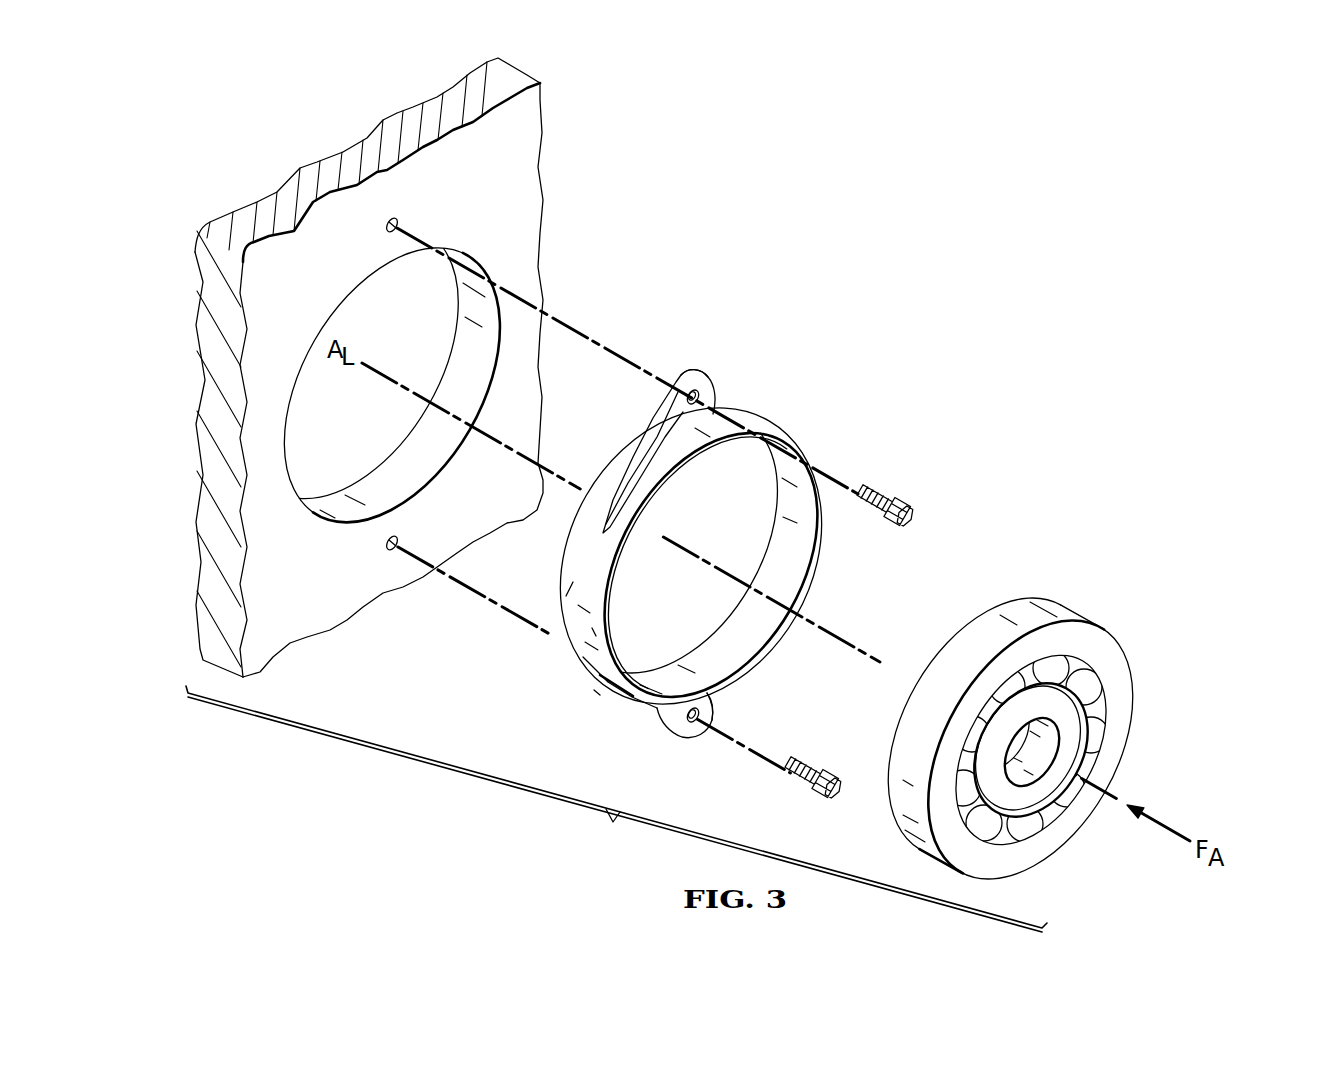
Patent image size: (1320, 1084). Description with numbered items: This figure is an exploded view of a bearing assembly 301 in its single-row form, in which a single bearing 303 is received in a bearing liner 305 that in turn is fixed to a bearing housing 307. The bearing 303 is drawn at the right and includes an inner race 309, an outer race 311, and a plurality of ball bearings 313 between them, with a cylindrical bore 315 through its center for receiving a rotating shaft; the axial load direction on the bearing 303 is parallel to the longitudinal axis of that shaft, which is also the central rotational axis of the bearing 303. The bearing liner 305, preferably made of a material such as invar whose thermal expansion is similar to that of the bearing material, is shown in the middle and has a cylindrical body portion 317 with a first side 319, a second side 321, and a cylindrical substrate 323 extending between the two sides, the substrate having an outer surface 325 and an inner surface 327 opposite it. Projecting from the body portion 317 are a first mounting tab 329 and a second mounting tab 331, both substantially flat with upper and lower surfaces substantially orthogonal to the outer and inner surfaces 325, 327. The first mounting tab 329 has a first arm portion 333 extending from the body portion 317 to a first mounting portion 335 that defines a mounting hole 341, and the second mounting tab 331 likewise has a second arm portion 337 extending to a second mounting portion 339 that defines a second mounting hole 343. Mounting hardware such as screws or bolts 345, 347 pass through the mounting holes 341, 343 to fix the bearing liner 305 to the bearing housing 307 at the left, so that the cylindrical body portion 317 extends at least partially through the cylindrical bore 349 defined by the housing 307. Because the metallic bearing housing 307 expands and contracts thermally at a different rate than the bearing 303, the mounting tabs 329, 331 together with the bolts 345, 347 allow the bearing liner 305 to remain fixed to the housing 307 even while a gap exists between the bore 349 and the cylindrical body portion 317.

The bearing assembly 301 is at (616, 809).
The bearing 303 is at (1041, 703).
The bearing liner 305 is at (797, 425).
The bearing housing 307 is at (545, 223).
The inner race 309 is at (1065, 743).
The outer race 311 is at (1120, 713).
The ball bearings 313 is at (1087, 677).
The cylindrical bore 315 is at (1028, 777).
The cylindrical body portion 317 is at (592, 692).
The first side 319 is at (620, 463).
The second side 321 is at (818, 553).
The cylindrical substrate 323 is at (585, 630).
The outer surface 325 is at (570, 580).
The inner surface 327 is at (740, 642).
The first mounting tab 329 is at (692, 370).
The second mounting tab 331 is at (688, 742).
The first arm portion 333 is at (663, 437).
The first mounting portion 335 is at (712, 378).
The second arm portion 337 is at (655, 712).
The second mounting portion 339 is at (712, 707).
The mounting hole 341 is at (702, 397).
The second mounting hole 343 is at (698, 727).
The bolt 345 is at (900, 502).
The bolt 347 is at (827, 772).
The cylindrical bore 349 is at (403, 473).